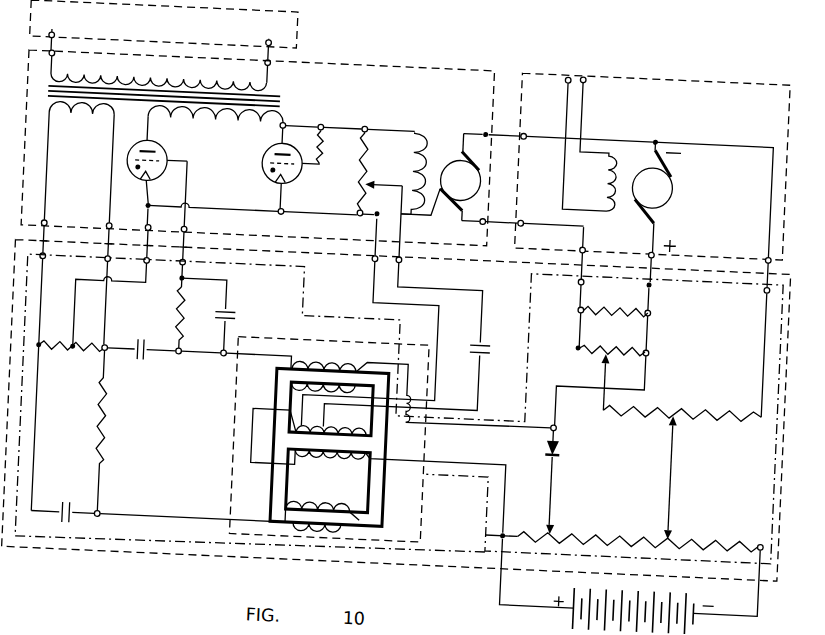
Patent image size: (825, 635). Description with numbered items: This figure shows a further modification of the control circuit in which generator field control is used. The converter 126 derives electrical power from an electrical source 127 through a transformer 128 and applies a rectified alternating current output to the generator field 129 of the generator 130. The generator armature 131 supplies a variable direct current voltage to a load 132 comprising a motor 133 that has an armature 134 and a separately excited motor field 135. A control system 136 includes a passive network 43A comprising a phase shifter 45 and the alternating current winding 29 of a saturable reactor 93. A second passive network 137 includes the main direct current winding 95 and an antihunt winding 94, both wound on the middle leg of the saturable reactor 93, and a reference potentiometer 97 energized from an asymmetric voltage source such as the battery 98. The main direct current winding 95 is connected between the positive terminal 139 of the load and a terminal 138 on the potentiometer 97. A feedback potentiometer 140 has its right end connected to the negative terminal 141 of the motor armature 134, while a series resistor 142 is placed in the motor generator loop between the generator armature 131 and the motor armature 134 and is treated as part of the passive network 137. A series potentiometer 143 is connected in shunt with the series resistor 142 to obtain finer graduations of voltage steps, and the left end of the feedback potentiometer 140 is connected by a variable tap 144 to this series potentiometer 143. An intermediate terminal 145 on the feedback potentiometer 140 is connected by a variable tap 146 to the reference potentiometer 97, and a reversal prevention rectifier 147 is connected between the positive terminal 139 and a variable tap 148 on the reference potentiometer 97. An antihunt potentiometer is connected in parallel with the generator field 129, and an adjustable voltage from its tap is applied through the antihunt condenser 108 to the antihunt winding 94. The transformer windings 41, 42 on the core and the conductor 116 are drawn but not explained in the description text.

The electrical source 127 is at (300, 18).
The converter 126 is at (379, 49).
The transformer 128 is at (278, 84).
The generator field 129 is at (418, 138).
The generator 130 is at (458, 118).
The generator armature 131 is at (492, 218).
The load 132 is at (606, 46).
The motor 133 is at (652, 140).
The motor armature 134 is at (678, 161).
The motor field 135 is at (615, 165).
The control system 136 is at (263, 545).
The second passive network 137 is at (506, 501).
The terminal 138 is at (524, 514).
The positive terminal 139 is at (659, 222).
The feedback potentiometer 140 is at (710, 380).
The negative terminal 141 is at (659, 114).
The series resistor 142 is at (652, 283).
The series potentiometer 143 is at (643, 321).
The variable tap 144 is at (619, 342).
The intermediate terminal 145 is at (690, 401).
The variable tap 146 is at (690, 503).
The reversal prevention rectifier 147 is at (581, 422).
The variable tap 148 is at (575, 506).
The reference potentiometer 97 is at (630, 511).
The battery 98 is at (726, 592).
The antihunt condenser 108 is at (491, 323).
The primary winding 41 is at (365, 354).
The secondary winding 42 is at (374, 500).
The alternating current winding 29 is at (290, 367).
The saturable reactor 93 is at (436, 463).
The antihunt winding 94 is at (302, 418).
The main direct current winding 95 is at (391, 421).
The phase shifter 45 is at (198, 412).
The passive network 43A is at (202, 535).
The conductor 116 is at (206, 630).